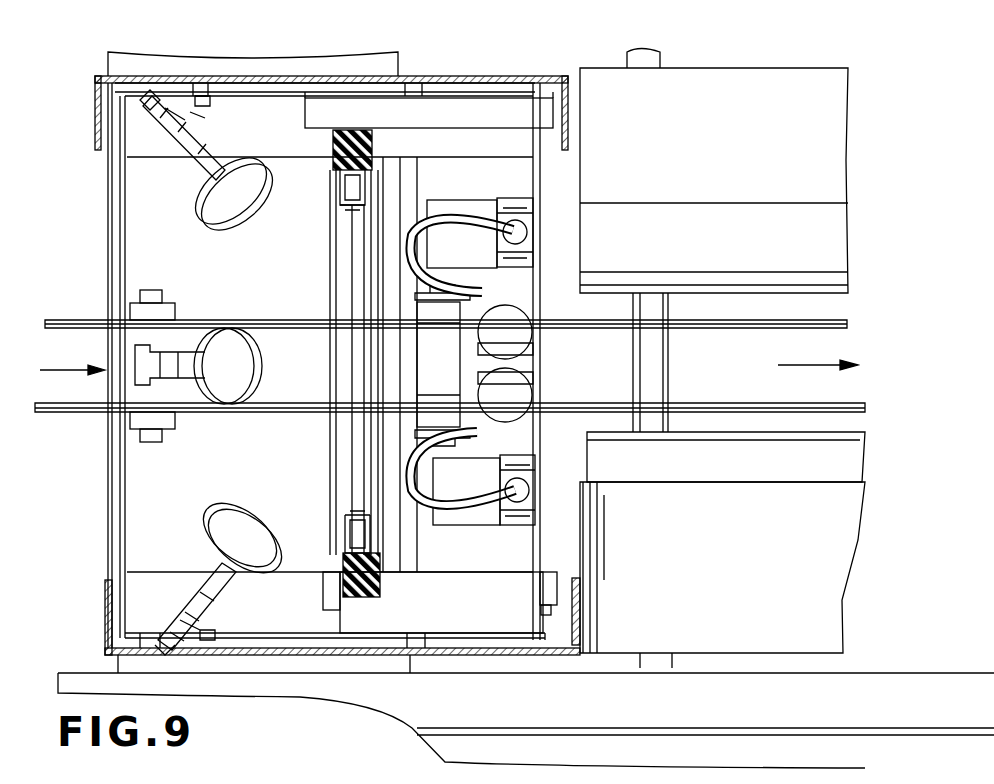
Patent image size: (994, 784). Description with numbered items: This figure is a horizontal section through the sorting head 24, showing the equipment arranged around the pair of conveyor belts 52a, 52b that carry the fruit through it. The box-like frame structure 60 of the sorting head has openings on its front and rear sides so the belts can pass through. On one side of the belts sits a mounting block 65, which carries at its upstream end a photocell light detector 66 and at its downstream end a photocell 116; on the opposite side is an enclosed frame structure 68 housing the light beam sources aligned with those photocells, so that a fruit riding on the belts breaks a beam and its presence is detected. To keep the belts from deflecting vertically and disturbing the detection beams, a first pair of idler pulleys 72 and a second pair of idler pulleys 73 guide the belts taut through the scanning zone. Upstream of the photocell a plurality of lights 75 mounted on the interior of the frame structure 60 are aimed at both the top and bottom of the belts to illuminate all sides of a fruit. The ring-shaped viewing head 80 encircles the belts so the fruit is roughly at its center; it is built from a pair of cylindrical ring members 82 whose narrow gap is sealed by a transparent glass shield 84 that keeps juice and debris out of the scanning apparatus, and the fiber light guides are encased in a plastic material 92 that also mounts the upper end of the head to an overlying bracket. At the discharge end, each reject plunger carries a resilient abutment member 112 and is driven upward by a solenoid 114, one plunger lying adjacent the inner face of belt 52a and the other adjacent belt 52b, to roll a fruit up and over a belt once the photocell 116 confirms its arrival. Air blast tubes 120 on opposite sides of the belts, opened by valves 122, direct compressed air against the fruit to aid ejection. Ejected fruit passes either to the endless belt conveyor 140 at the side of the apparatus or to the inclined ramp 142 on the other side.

The sorting head 24 is at (447, 78).
The box-like frame structure 60 is at (100, 99).
The enclosed frame structure 68 is at (435, 122).
The plastic material 92 is at (375, 140).
The cylindrical ring members 82 is at (340, 193).
The transparent glass shield 84 is at (340, 213).
The viewing head 80 is at (330, 243).
The lights 75 is at (247, 208).
The first pair of idler pulleys 72 is at (172, 305).
The conveyor belt 52b is at (758, 325).
The conveyor belt 52a is at (762, 398).
The second pair of idler pulleys 73 is at (437, 415).
The resilient abutment member 112 is at (528, 333).
The solenoid 114 is at (512, 373).
The air blast tubes 120 is at (457, 215).
The valves 122 is at (522, 218).
The mounting block 65 is at (513, 599).
The photocell light detector 66 is at (325, 605).
The photocell 116 is at (540, 615).
The inclined ramp 142 is at (722, 154).
The endless belt conveyor 140 is at (730, 564).